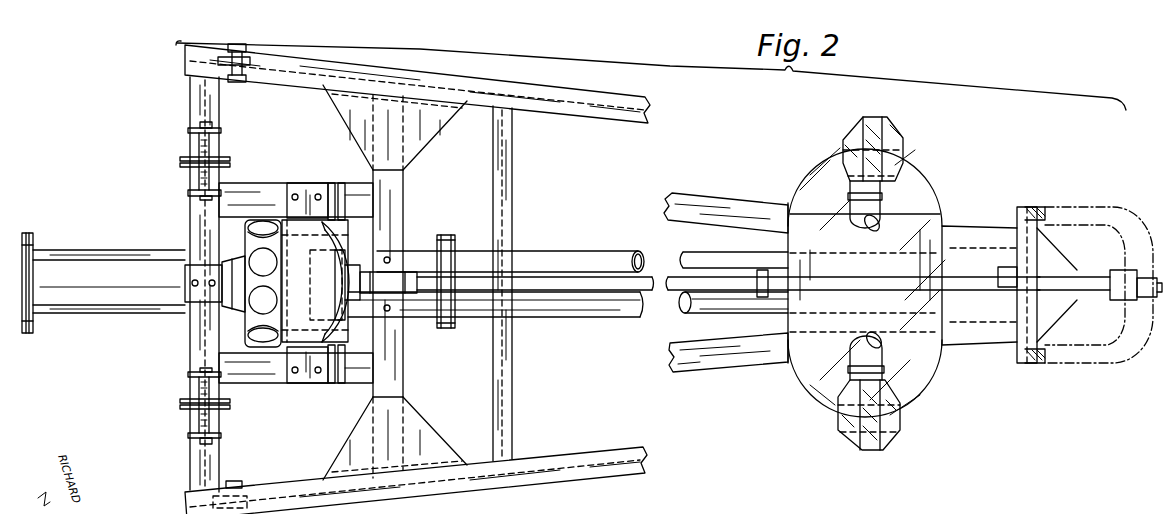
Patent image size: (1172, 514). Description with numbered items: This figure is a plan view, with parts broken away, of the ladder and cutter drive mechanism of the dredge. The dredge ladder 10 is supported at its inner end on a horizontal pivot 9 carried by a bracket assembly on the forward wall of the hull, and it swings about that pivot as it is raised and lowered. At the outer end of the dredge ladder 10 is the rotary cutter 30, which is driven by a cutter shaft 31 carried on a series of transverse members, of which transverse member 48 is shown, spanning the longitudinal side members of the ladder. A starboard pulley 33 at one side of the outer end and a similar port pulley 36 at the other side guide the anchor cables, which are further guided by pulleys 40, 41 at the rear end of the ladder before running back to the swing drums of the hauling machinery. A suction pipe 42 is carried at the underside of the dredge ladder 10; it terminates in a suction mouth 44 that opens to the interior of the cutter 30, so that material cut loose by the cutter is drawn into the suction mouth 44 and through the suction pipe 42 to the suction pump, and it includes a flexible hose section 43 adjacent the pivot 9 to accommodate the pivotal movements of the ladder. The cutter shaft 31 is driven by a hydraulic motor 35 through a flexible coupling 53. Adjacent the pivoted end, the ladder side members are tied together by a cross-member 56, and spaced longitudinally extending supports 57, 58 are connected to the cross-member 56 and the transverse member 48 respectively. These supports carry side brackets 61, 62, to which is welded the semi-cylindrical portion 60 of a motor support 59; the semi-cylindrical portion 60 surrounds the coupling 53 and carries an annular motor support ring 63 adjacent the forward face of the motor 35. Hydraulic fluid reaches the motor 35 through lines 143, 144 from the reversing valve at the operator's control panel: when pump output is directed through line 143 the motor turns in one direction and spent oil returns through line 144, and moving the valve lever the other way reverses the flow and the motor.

The horizontal pivot 9 is at (236, 83).
The dredge ladder 10 is at (583, 480).
The rotary cutter 30 is at (1080, 200).
The cutter shaft 31 is at (587, 263).
The starboard pulley 33 is at (897, 427).
The hydraulic motor 35 is at (272, 212).
The port pulley 36 is at (898, 142).
The pulley 40 is at (182, 410).
The pulley 41 is at (185, 165).
The suction pipe 42 is at (557, 310).
The flexible hose section 43 is at (87, 305).
The suction mouth 44 is at (893, 277).
The transverse member 48 is at (400, 192).
The flexible coupling 53 is at (342, 333).
The cross-member 56 is at (195, 345).
The longitudinally extending support 57 is at (257, 380).
The longitudinally extending support 58 is at (245, 187).
The motor support 59 is at (332, 202).
The semi-cylindrical portion 60 is at (340, 242).
The side bracket 61 is at (312, 377).
The side bracket 62 is at (307, 192).
The annular motor support ring 63 is at (286, 247).
The line 143 is at (195, 278).
The line 144 is at (212, 287).